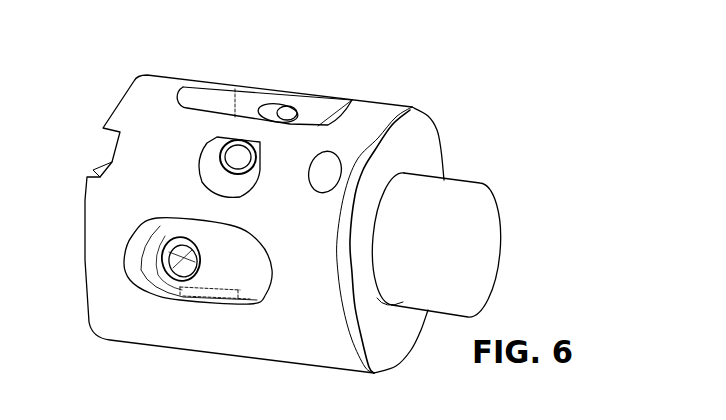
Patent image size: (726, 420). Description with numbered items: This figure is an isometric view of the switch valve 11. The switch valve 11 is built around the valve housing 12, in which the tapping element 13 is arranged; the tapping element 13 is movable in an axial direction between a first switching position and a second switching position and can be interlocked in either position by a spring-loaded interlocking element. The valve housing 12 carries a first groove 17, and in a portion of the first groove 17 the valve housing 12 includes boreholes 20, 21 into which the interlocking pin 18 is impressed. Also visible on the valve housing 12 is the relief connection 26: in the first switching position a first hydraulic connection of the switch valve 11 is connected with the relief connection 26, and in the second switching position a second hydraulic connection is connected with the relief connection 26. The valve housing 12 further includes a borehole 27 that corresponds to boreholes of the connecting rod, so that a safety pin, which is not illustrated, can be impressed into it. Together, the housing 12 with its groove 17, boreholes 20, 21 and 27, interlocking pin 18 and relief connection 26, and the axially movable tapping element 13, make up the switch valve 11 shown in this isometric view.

The switch valve 11 is at (568, 158).
The valve housing 12 is at (440, 137).
The tapping element 13 is at (500, 250).
The first groove 17 is at (193, 100).
The interlocking pin 18 is at (263, 108).
The borehole 20 is at (290, 115).
The borehole 21 is at (217, 160).
The relief connection 26 is at (223, 280).
The borehole 27 is at (330, 165).